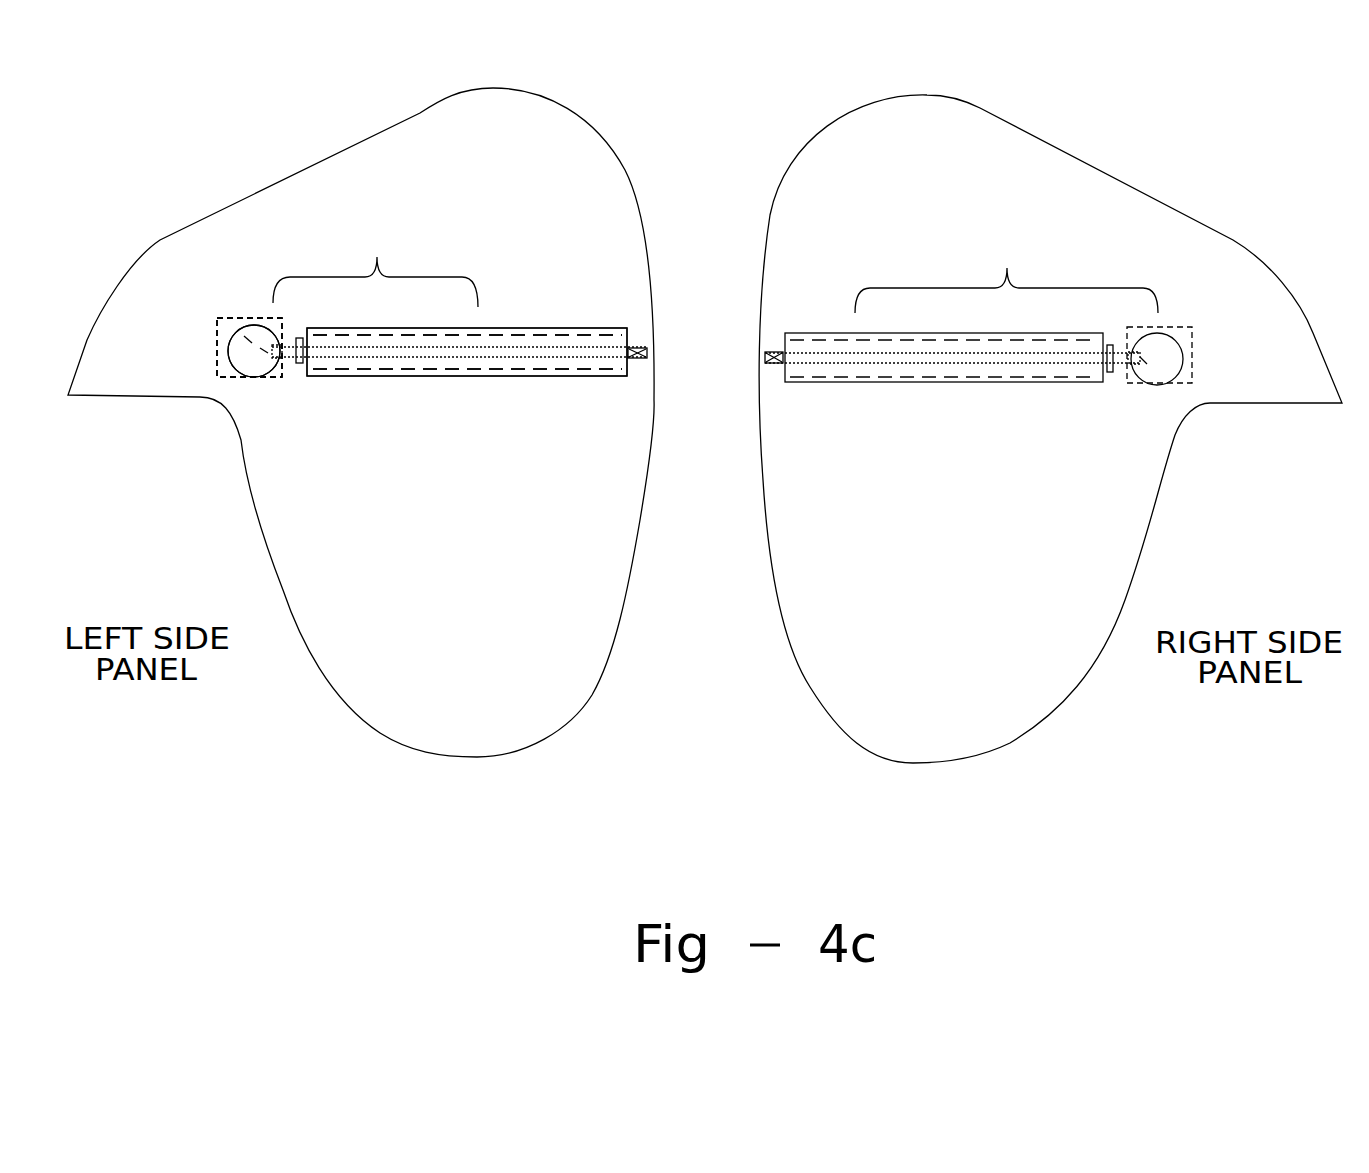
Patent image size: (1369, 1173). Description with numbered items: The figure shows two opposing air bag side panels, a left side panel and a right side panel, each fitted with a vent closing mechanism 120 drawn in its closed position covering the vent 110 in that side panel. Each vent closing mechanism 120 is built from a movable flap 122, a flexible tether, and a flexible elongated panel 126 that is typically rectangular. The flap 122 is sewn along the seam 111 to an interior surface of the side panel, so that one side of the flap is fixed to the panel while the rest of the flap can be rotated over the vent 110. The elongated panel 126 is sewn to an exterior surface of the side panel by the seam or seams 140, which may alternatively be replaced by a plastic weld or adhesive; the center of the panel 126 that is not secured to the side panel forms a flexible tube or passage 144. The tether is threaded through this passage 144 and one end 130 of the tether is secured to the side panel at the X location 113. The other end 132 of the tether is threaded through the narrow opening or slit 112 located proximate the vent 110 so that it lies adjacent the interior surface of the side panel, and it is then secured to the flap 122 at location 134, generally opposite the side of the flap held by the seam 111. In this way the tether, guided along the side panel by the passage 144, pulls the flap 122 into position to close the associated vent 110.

The vent 110 is at (243, 363).
The seam 111 is at (222, 350).
The slit 112 is at (296, 365).
The tether attachment location 113 is at (637, 350).
The vent closing mechanism 120 is at (375, 268).
The flap 122 is at (223, 313).
The elongated panel 126 is at (502, 328).
The tether end 130 is at (637, 357).
The tether end 132 is at (287, 325).
The flap attachment location 134 is at (233, 313).
The seam 140 is at (563, 330).
The passage 144 is at (600, 340).